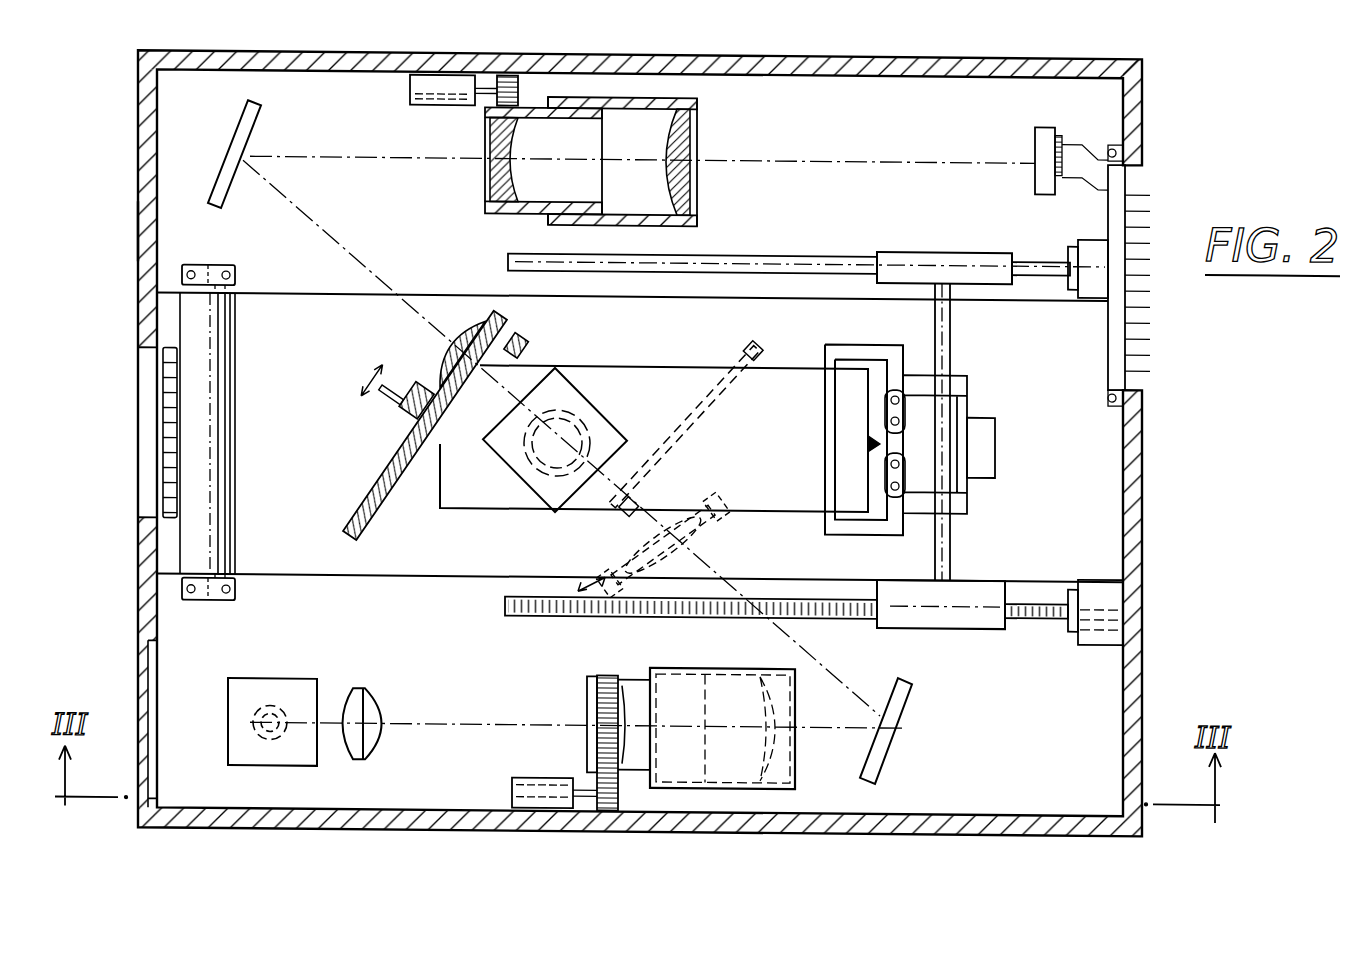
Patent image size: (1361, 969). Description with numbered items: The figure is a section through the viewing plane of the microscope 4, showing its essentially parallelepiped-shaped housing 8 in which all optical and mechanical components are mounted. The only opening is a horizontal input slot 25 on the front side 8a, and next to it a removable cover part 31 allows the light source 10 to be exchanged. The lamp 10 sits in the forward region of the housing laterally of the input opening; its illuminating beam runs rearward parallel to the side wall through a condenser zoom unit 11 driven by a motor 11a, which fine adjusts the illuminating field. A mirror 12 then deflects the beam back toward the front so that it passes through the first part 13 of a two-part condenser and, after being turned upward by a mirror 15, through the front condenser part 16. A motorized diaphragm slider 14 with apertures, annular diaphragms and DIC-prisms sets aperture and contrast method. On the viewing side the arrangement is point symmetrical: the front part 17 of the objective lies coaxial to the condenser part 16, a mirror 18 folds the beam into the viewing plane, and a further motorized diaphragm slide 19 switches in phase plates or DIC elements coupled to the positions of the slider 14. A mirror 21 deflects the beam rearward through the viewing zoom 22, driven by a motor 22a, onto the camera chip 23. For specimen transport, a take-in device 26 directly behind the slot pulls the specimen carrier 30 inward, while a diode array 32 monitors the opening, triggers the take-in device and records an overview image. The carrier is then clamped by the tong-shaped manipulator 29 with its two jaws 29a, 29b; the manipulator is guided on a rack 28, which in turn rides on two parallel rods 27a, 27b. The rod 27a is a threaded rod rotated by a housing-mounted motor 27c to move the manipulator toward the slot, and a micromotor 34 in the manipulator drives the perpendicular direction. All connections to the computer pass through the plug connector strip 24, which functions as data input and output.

The microscope 4 is at (1176, 464).
The housing 8 is at (445, 822).
The front side 8a is at (150, 208).
The light source 10 is at (273, 710).
The condenser zoom unit 11 is at (719, 662).
The motor 11a is at (546, 773).
The mirror 12 is at (910, 692).
The first part of the condenser 13 is at (710, 517).
The diaphragm slider 14 is at (752, 340).
The mirror 15 is at (555, 439).
The second part of the condenser 16 is at (525, 462).
The front part of the objective 17 is at (547, 468).
The mirror 18 is at (600, 351).
The diaphragm slide 19 is at (410, 415).
The mirror 21 is at (243, 120).
The viewing zoom 22 is at (697, 98).
The motor 22a is at (410, 86).
The camera chip 23 is at (1035, 130).
The plug connector strip 24 is at (1141, 179).
The input slot 25 is at (145, 414).
The specimen take-in device 26 is at (215, 333).
The threaded rod 27a is at (848, 612).
The rod 27b is at (792, 249).
The motor 27c is at (1092, 636).
The rack 28 is at (952, 334).
The manipulator 29 is at (917, 367).
The tong jaw 29a is at (869, 338).
The tong jaw 29b is at (848, 520).
The specimen carrier 30 is at (800, 382).
The cover part 31 is at (143, 679).
The diode array 32 is at (168, 460).
The micromotor 34 is at (990, 436).